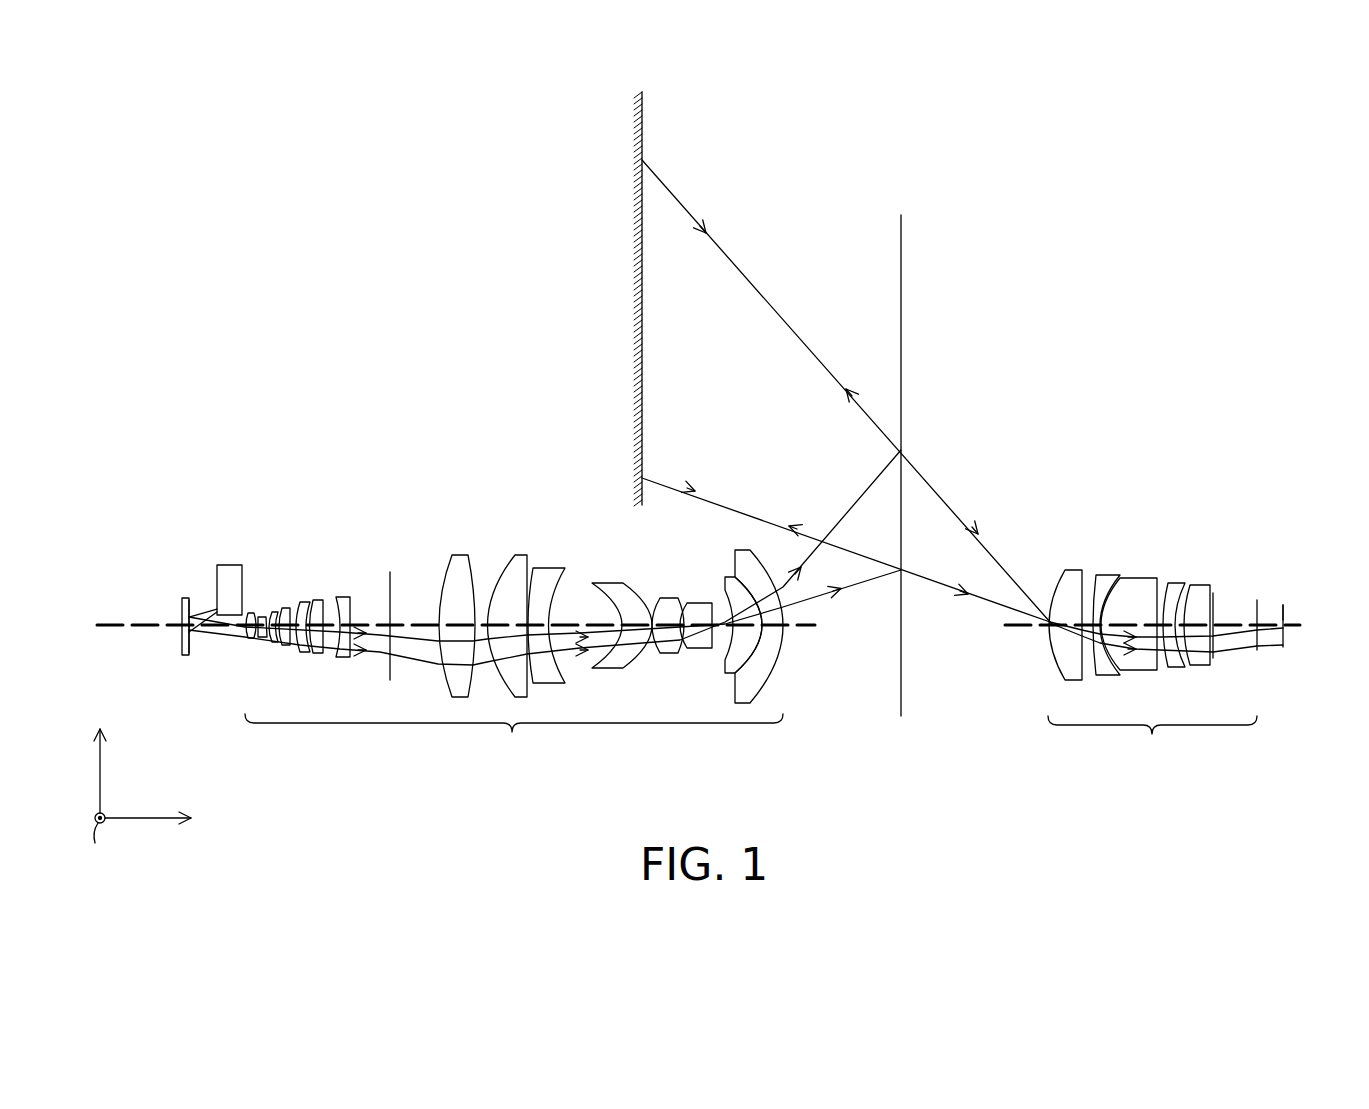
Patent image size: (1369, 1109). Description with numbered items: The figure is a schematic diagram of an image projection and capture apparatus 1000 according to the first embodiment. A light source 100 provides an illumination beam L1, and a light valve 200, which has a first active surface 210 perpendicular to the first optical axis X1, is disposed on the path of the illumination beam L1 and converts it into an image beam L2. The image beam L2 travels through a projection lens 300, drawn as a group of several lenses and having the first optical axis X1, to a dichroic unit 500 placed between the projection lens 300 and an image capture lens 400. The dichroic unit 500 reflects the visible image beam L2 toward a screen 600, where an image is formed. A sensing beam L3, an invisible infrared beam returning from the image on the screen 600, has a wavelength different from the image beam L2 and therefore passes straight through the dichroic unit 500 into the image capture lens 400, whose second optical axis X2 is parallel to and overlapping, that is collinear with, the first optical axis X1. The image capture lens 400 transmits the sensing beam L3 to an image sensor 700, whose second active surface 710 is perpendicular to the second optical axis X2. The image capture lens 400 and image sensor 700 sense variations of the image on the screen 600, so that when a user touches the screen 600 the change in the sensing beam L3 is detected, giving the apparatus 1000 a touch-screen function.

The light source 100 is at (235, 571).
The light valve 200 is at (181, 649).
The first active surface 210 is at (193, 647).
The projection lens 300 is at (514, 662).
The image capture lens 400 is at (1152, 672).
The dichroic unit 500 is at (901, 683).
The screen 600 is at (645, 127).
The image sensor 700 is at (1290, 650).
The second active surface 710 is at (1281, 611).
The image projection and capture apparatus 1000 is at (1265, 833).
The illumination beam L1 is at (212, 607).
The image beam L2 is at (802, 331).
The sensing beam L3 is at (686, 208).
The first optical axis X1 is at (122, 622).
The second optical axis X2 is at (1296, 622).